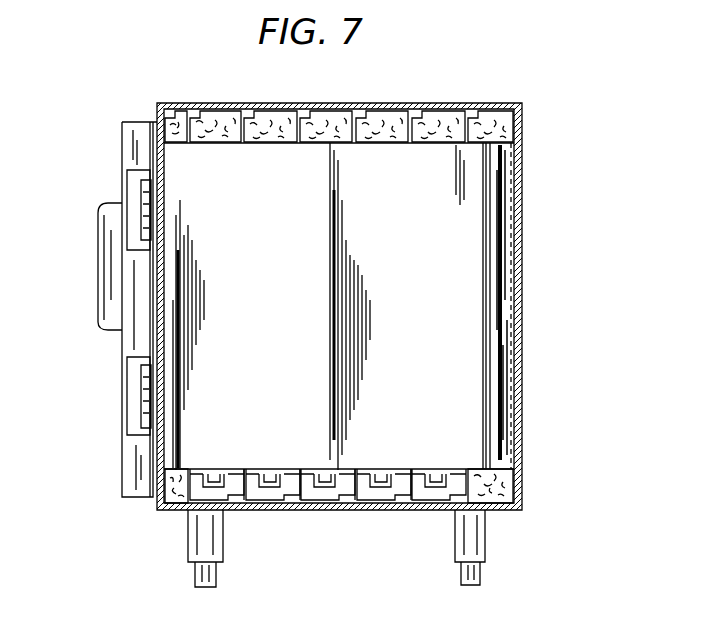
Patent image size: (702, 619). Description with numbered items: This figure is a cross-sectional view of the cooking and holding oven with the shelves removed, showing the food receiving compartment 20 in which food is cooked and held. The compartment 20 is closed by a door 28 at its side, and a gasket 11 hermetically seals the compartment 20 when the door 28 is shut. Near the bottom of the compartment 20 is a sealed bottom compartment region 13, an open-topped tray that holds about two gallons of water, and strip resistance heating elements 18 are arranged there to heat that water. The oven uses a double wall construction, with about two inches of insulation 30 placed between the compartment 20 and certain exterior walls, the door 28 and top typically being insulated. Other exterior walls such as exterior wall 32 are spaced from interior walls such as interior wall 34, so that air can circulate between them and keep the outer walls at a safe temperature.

The gasket 11 is at (156, 124).
The sealed bottom compartment region 13 is at (469, 466).
The strip resistance heating elements 18 is at (222, 469).
The food receiving compartment 20 is at (318, 292).
The door 28 is at (131, 463).
The insulation 30 is at (321, 114).
The exterior wall 32 is at (522, 217).
The interior wall 34 is at (484, 213).